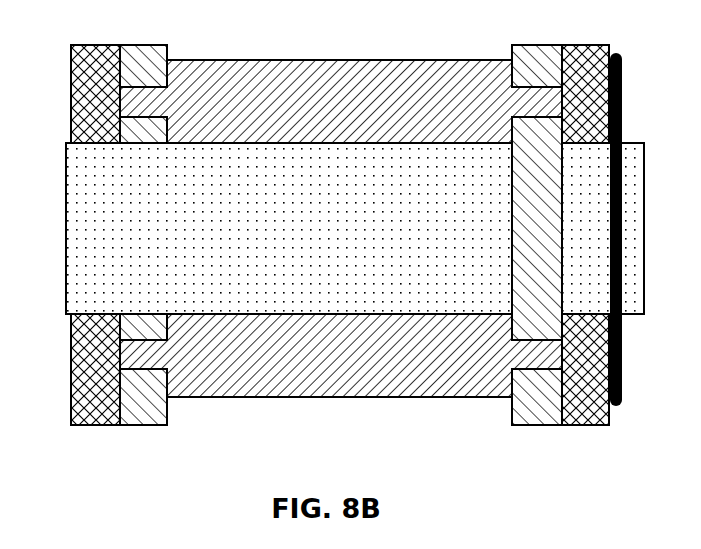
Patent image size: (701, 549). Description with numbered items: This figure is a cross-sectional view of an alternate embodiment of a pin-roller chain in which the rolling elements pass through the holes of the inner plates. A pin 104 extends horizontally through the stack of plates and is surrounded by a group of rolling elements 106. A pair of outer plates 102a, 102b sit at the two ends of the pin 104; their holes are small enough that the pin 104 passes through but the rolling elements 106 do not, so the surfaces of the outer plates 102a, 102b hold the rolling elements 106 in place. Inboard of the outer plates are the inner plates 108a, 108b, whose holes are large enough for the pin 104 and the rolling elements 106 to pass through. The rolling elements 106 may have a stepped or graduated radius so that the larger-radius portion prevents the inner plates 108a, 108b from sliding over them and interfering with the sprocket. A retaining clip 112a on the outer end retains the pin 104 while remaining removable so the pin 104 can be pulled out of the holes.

The outer plate 102a is at (577, 45).
The outer plate 102b is at (87, 45).
The pin 104 is at (644, 196).
The rolling elements 106 is at (330, 60).
The inner plate 108a is at (523, 45).
The inner plate 108b is at (165, 45).
The retaining clip 112a is at (623, 63).